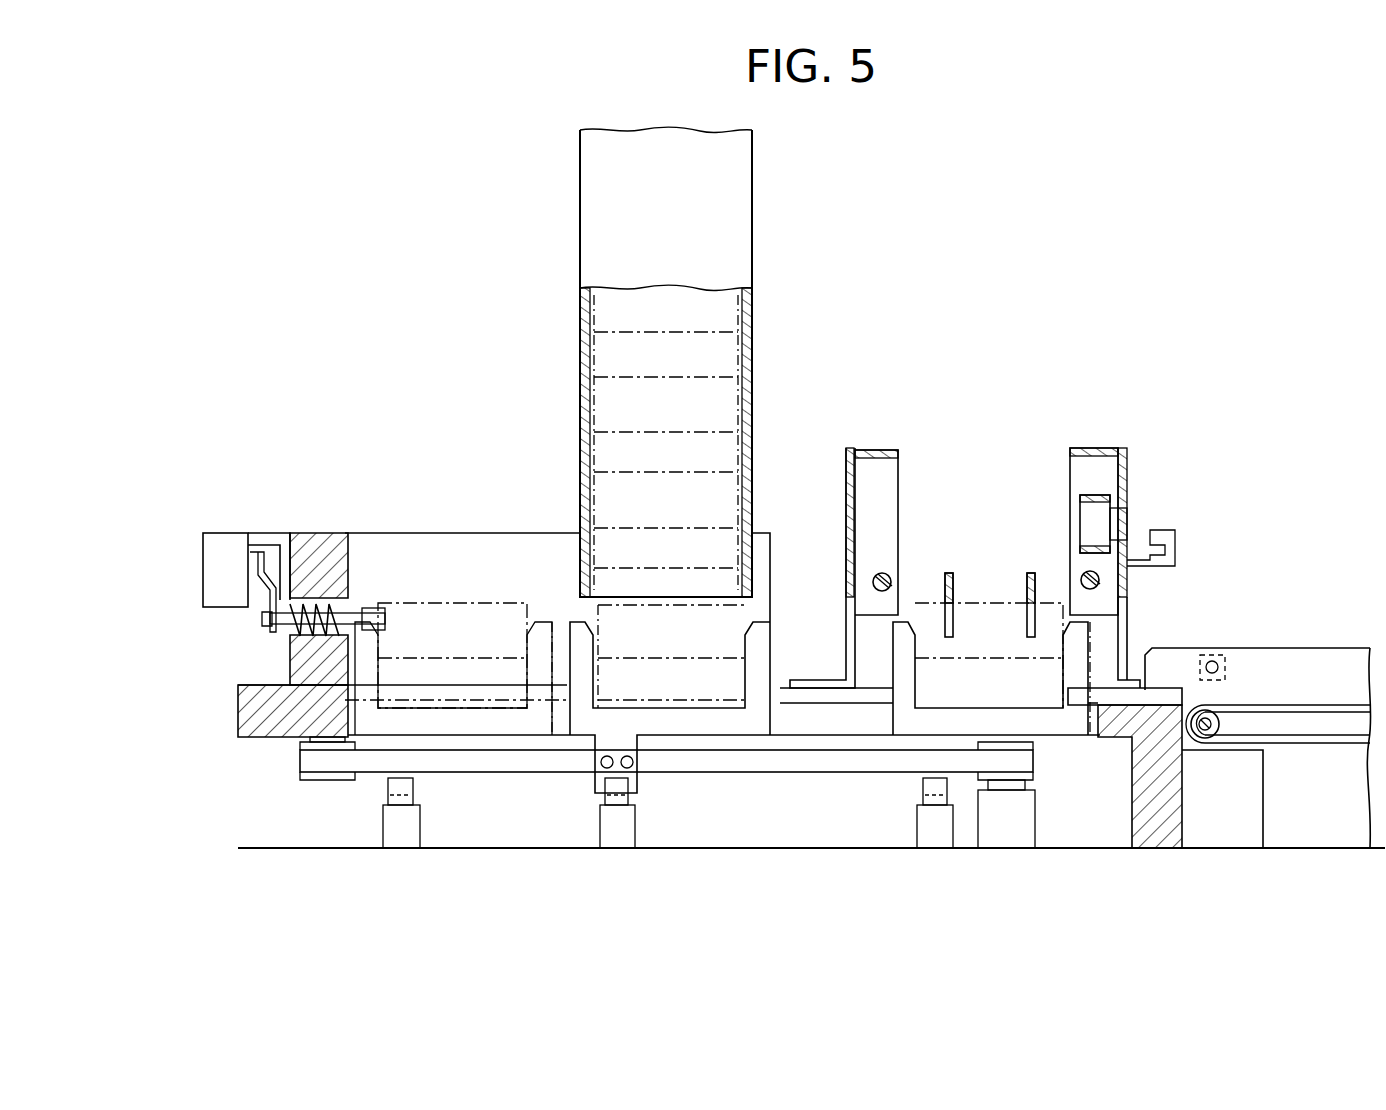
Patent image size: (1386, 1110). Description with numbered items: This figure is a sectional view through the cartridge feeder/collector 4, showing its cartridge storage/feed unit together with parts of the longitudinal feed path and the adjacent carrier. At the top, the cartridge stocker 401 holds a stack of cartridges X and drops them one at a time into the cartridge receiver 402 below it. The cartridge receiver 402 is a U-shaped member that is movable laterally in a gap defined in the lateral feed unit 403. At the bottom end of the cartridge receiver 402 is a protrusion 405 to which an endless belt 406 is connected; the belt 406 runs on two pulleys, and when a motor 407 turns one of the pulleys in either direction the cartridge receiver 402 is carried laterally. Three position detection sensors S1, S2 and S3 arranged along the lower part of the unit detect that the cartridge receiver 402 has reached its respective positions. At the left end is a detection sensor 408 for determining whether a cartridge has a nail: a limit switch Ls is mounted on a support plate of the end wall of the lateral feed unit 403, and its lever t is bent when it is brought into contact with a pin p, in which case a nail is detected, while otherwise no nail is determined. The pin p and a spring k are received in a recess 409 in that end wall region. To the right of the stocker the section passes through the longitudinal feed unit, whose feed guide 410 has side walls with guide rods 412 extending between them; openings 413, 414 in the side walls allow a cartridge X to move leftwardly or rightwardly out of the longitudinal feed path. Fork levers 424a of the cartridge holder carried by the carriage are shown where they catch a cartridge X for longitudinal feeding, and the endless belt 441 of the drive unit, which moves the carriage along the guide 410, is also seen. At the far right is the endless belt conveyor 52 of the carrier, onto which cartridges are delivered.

The cartridge feeder/collector 4 is at (1058, 368).
The cartridge stocker 401 is at (726, 212).
The cartridge X is at (728, 427).
The cartridge receiver 402 is at (577, 625).
The lateral feed unit 403 is at (440, 530).
The protrusion 405 is at (628, 768).
The endless belt 406 is at (553, 760).
The motor 407 is at (1003, 820).
The detection sensor 408 is at (200, 527).
The recess 409 is at (318, 648).
The feed guide 410 is at (265, 533).
The guide rods 412 is at (872, 580).
The opening 413 is at (850, 638).
The opening 414 is at (1128, 632).
The fork levers 424a is at (1031, 572).
The endless belt 441 is at (1098, 498).
The endless belt conveyor 52 is at (1310, 650).
The position detection sensor S1 is at (618, 795).
The position detection sensor S2 is at (412, 785).
The position detection sensor S3 is at (924, 785).
The limit switch Ls is at (230, 540).
The lever t is at (268, 592).
The pin p is at (272, 612).
The spring k is at (305, 598).